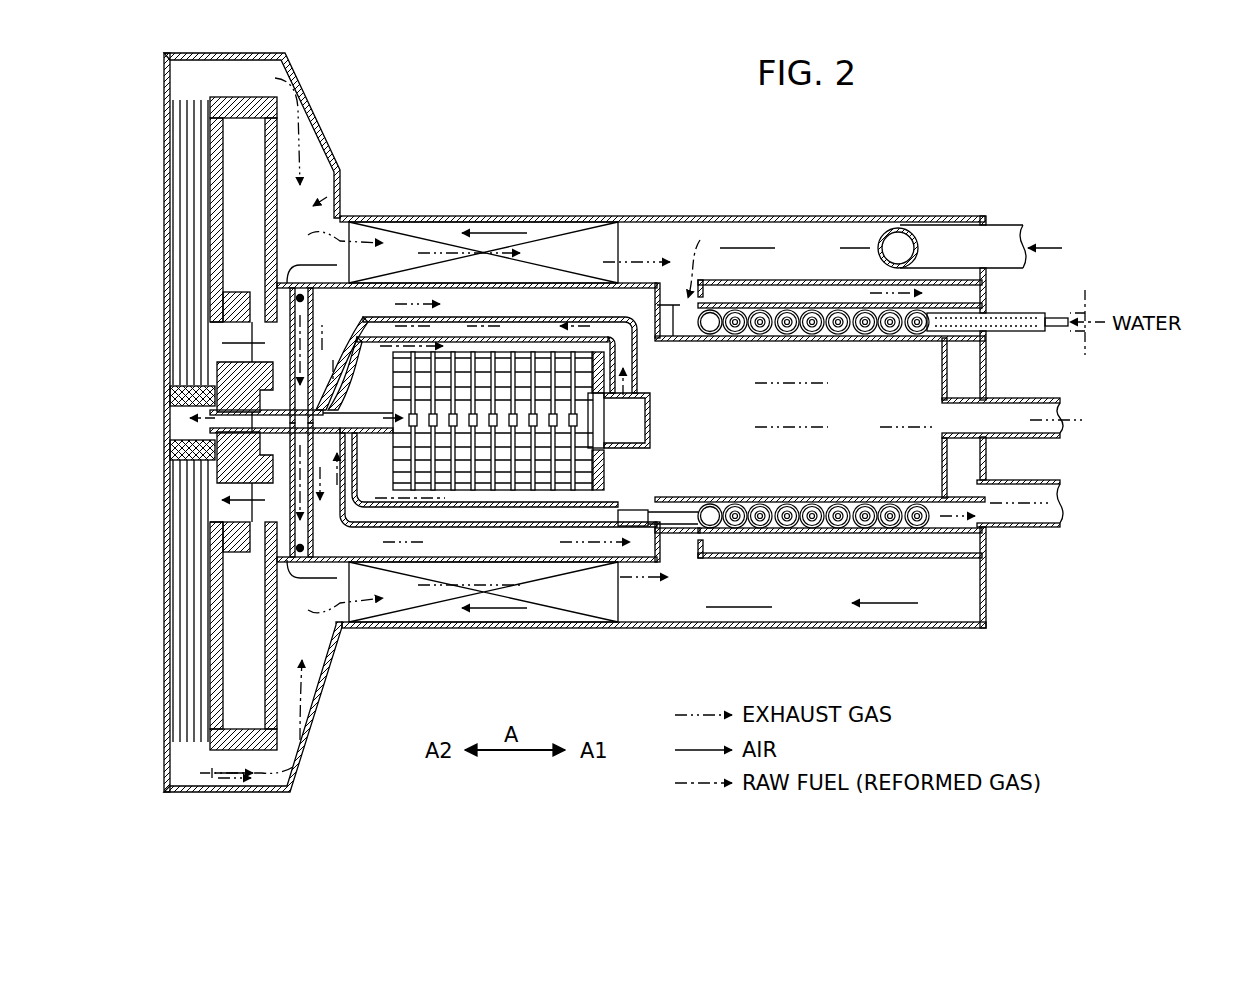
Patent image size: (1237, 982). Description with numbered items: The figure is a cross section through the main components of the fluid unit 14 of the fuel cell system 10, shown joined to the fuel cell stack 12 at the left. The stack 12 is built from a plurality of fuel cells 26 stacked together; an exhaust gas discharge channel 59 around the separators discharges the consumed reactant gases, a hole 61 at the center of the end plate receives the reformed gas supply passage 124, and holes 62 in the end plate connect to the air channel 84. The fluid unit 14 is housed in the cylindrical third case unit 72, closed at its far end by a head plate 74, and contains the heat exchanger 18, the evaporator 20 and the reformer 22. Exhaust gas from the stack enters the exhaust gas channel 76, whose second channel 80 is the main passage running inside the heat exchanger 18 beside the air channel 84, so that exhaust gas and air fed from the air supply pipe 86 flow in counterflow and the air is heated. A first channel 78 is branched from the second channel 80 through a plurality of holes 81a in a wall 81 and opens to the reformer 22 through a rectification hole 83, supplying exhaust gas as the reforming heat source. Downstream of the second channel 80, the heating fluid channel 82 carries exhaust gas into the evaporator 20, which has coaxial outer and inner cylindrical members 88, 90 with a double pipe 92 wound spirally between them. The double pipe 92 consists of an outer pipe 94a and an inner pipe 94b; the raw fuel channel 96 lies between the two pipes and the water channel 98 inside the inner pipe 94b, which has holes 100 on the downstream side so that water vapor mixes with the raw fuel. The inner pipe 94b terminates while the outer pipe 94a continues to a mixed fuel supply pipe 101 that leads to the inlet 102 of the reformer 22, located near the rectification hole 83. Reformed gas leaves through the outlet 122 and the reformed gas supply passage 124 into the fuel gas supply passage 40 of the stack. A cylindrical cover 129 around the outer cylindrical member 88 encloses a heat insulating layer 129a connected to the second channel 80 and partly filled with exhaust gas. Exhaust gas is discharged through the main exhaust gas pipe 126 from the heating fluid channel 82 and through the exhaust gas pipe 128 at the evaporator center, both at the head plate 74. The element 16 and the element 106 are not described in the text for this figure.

The fuel cell system 10 is at (964, 422).
The fuel cell stack 12 is at (190, 93).
The fluid unit 14 is at (981, 377).
The lower heat exchanger 16 is at (598, 630).
The heat exchanger 18 is at (560, 213).
The evaporator 20 is at (737, 300).
The reformer 22 is at (552, 350).
The fuel cells 26 is at (192, 660).
The fuel gas supply passage 40 is at (185, 410).
The exhaust gas discharge channel 59 is at (216, 793).
The hole 61 is at (240, 420).
The holes 62 is at (230, 520).
The third case unit 72 is at (690, 628).
The head plate 74 is at (978, 628).
The exhaust gas channel 76 is at (318, 208).
The first channel 78 is at (380, 395).
The second channel 80 is at (440, 240).
The wall 81 is at (303, 548).
The holes 81a is at (298, 296).
The heating fluid channel 82 is at (710, 261).
The rectification hole 83 is at (336, 404).
The air channel 84 is at (517, 214).
The air supply pipe 86 is at (994, 245).
The outer cylindrical member 88 is at (965, 558).
The inner cylindrical member 90 is at (890, 497).
The double pipe 92 is at (808, 530).
The outer pipe 94a is at (740, 530).
The inner pipe 94b is at (730, 530).
The raw fuel channel 96 is at (843, 530).
The water channel 98 is at (833, 528).
The holes 100 is at (789, 505).
The mixed fuel supply pipe 101 is at (528, 530).
The inlet 102 is at (384, 438).
The casing flange 106 is at (256, 302).
The outlet 122 is at (627, 428).
The reformed gas supply passage 124 is at (482, 318).
The main exhaust gas pipe 126 is at (1015, 528).
The exhaust gas pipe 128 is at (1018, 438).
The cylindrical cover 129 is at (778, 281).
The heat insulating layer 129a is at (835, 290).